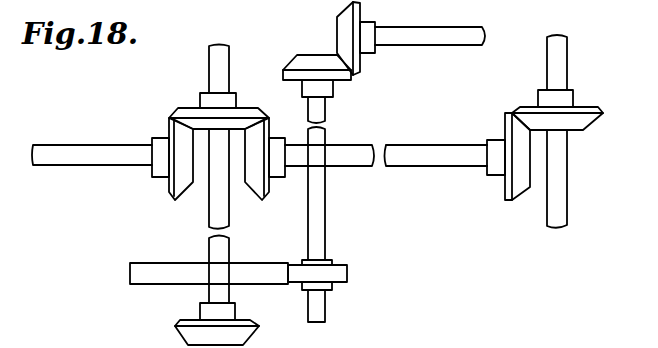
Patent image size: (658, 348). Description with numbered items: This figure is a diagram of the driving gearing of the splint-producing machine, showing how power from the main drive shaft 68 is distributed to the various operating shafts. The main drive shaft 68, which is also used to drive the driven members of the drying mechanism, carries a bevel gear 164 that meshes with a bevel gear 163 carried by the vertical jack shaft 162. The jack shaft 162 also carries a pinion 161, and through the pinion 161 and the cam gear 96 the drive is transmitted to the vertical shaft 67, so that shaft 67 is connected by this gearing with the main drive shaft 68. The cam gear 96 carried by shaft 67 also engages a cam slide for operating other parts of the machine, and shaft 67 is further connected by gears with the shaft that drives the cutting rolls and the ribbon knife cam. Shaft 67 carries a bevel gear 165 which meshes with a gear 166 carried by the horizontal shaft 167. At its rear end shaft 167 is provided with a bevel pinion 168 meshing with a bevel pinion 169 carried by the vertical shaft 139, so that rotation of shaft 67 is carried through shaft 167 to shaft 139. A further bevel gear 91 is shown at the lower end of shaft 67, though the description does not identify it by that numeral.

The shaft 67 is at (213, 210).
The main drive shaft 68 is at (470, 35).
The bevel gear 91 is at (270, 347).
The cam gear 96 is at (130, 278).
The shaft 139 is at (565, 200).
The pinion 161 is at (340, 275).
The jack shaft 162 is at (323, 215).
The bevel gear 163 is at (297, 63).
The bevel gear 164 is at (362, 58).
The bevel gear 165 is at (196, 108).
The gear 166 is at (265, 192).
The shaft 167 is at (464, 160).
The bevel pinion 168 is at (520, 190).
The bevel pinion 169 is at (590, 118).